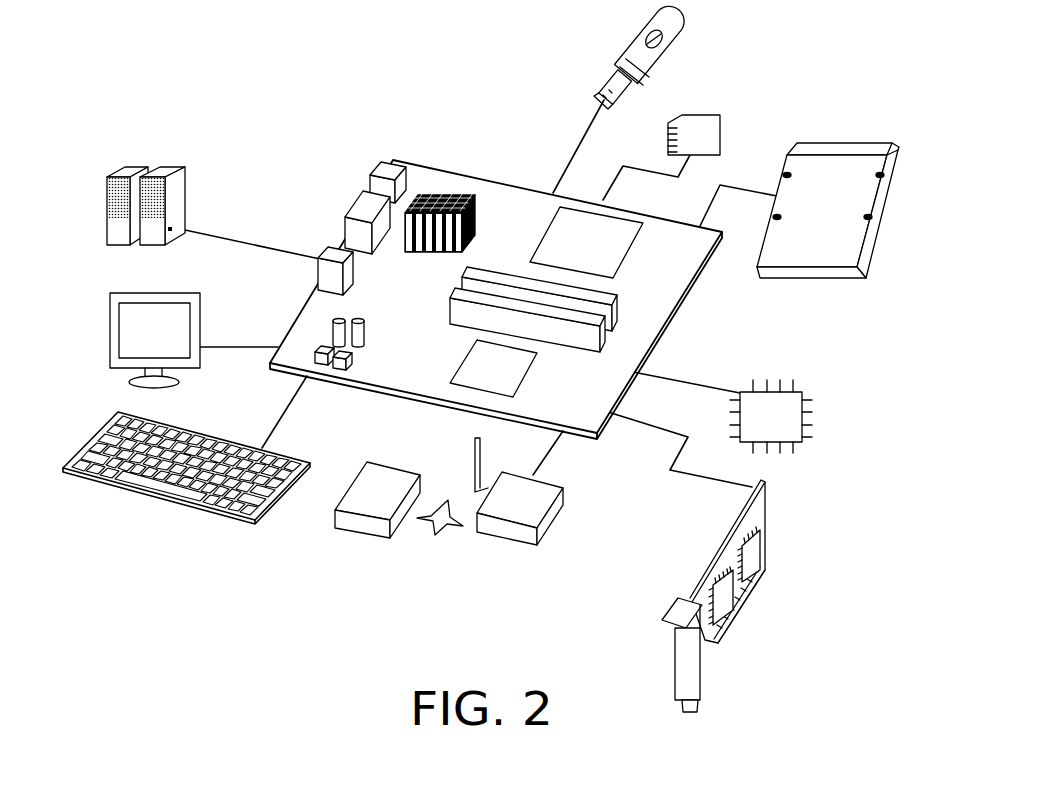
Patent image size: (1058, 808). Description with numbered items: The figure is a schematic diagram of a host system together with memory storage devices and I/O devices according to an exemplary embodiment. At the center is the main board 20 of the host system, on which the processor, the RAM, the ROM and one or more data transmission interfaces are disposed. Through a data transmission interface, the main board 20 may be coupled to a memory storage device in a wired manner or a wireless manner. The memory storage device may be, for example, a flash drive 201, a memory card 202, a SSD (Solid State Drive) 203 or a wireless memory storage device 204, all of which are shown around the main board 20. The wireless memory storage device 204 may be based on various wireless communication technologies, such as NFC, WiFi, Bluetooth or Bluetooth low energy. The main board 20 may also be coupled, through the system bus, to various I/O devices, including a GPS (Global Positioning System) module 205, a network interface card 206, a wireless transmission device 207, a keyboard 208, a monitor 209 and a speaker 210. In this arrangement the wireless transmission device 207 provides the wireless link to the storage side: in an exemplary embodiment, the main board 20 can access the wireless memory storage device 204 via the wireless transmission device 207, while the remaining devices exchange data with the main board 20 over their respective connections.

The main board 20 is at (497, 200).
The flash drive 201 is at (620, 55).
The memory card 202 is at (722, 120).
The SSD (Solid State Drive) 203 is at (847, 143).
The wireless memory storage device 204 is at (355, 475).
The GPS (Global Positioning System) module 205 is at (813, 420).
The network interface card 206 is at (767, 538).
The wireless transmission device 207 is at (555, 525).
The keyboard 208 is at (190, 508).
The monitor 209 is at (108, 350).
The speaker 210 is at (105, 232).